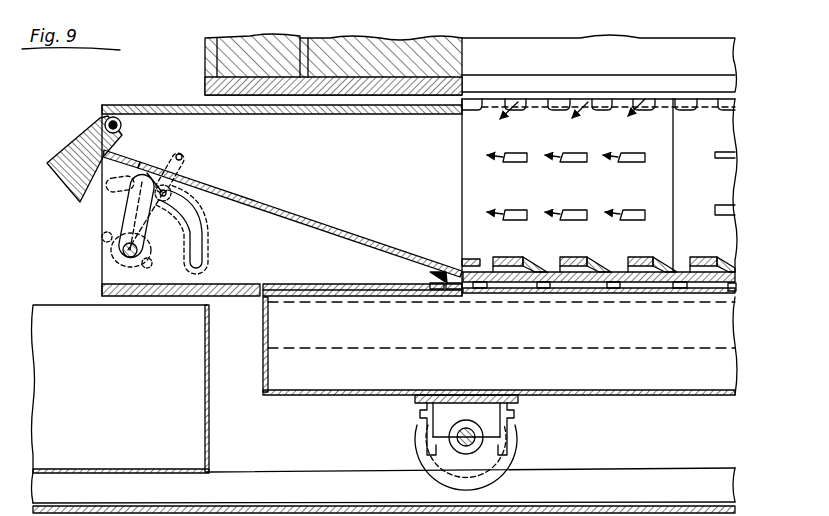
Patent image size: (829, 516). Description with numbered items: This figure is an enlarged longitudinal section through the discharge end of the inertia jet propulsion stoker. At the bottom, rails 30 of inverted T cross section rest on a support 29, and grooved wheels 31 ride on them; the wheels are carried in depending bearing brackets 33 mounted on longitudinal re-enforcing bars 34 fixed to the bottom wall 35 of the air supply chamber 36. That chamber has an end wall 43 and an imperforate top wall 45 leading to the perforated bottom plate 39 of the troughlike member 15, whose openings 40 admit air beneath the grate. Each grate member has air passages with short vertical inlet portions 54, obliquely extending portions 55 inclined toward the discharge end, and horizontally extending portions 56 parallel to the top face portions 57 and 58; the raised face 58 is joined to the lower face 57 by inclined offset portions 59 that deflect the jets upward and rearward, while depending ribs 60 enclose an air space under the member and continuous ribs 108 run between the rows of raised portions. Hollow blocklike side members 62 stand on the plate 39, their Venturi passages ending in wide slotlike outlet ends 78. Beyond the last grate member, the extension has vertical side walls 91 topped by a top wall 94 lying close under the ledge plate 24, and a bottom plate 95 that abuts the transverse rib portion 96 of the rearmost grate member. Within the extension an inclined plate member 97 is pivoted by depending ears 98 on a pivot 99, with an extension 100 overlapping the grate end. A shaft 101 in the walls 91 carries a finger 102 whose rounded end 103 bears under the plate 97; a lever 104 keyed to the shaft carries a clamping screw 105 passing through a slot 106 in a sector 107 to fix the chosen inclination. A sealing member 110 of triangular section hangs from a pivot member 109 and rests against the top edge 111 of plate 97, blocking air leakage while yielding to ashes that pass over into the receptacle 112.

The troughlike member 15 is at (140, 102).
The ledge plate 24 is at (206, 80).
The support 29 is at (265, 505).
The rails 30 is at (598, 474).
The grooved wheels 31 is at (515, 437).
The bearing brackets 33 is at (434, 424).
The re-enforcing bars 34 is at (519, 398).
The bottom wall 35 is at (647, 395).
The air supply chamber 36 is at (595, 370).
The bottom plate 39 is at (738, 287).
The openings 40 is at (522, 303).
The end wall 43 is at (262, 340).
The top wall 45 is at (352, 293).
The vertical inlet portions 54 is at (560, 296).
The obliquely extending portions 55 is at (603, 266).
The horizontally extending portions 56 is at (577, 258).
The top face portion 57 is at (556, 278).
The top face portion 58 is at (508, 258).
The inclined offset portions 59 is at (534, 263).
The depending ribs 60 is at (680, 290).
The side members 62 is at (618, 188).
The outlet end 78 is at (520, 163).
The side walls 91 is at (348, 192).
The top wall 94 is at (388, 114).
The bottom plate 95 is at (249, 285).
The rib portion 96 is at (480, 292).
The inclined plate member 97 is at (364, 243).
The depending ears 98 is at (436, 269).
The pivot 99 is at (436, 290).
The extension 100 is at (454, 290).
The shaft 101 is at (124, 251).
The finger 102 is at (128, 217).
The rounded end 103 is at (148, 174).
The lever 104 is at (190, 160).
The clamping screw 105 is at (172, 198).
The slot 106 is at (200, 231).
The sector 107 is at (204, 249).
The continuous ribs 108 is at (462, 258).
The pivot member 109 is at (105, 125).
The sealing member 110 is at (68, 182).
The top edge 111 is at (115, 152).
The receptacle 112 is at (210, 414).